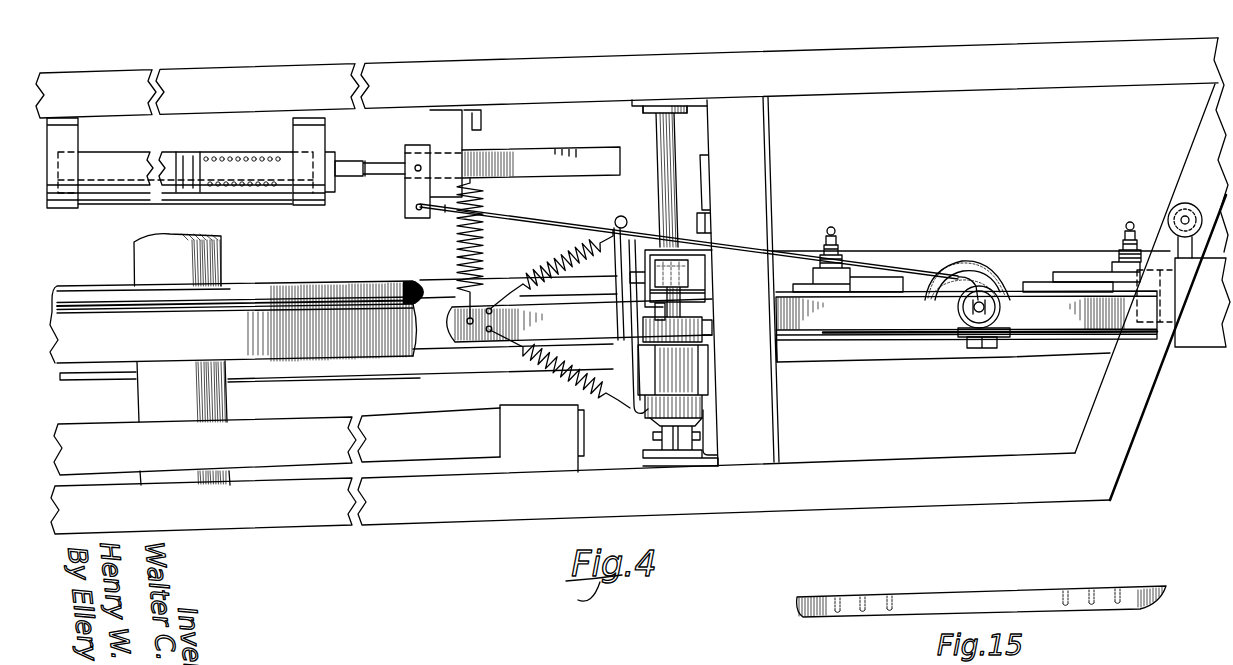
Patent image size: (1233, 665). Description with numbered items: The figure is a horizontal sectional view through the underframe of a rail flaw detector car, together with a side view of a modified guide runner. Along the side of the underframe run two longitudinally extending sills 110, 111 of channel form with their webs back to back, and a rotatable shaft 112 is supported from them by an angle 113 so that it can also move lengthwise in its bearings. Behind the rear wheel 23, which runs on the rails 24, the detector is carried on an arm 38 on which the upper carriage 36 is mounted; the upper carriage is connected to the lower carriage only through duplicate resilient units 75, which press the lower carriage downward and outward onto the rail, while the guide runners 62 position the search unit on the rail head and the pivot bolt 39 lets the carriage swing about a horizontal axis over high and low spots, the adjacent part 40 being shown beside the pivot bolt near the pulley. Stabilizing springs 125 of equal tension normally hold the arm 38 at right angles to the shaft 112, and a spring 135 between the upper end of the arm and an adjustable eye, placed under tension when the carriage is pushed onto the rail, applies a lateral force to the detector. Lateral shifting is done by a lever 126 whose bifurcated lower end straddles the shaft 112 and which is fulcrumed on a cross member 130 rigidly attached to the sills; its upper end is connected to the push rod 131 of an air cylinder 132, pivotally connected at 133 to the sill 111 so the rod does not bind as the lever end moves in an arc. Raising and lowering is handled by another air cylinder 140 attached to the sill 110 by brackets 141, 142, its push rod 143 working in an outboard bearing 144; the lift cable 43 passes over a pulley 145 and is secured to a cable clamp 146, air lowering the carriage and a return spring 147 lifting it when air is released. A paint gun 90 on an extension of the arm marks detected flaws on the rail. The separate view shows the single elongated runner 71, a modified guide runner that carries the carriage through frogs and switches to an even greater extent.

In FIG. 4, the sill 110 is at (261, 77).
In FIG. 4, the sill 111 is at (336, 515).
In FIG. 4, the cross member 130 is at (768, 137).
In FIG. 4, the angle 113 is at (696, 100).
In FIG. 4, the rotatable shaft 112 is at (657, 143).
In FIG. 4, the rear wheel 23 is at (297, 288).
In FIG. 4, the bracket 141 is at (78, 136).
In FIG. 4, the air cylinder 140 is at (173, 157).
In FIG. 4, the return spring 147 is at (240, 157).
In FIG. 4, the bracket 142 is at (320, 131).
In FIG. 4, the push rod 143 is at (366, 176).
In FIG. 4, the outboard bearing 144 is at (441, 138).
In FIG. 4, the cable clamp 146 is at (415, 212).
In FIG. 4, the lift cable 43 is at (527, 218).
In FIG. 4, the spring 135 is at (455, 252).
In FIG. 4, the stabilizing springs 125 is at (567, 257).
In FIG. 4, the push rod 131 is at (657, 309).
In FIG. 4, the lever 126 is at (678, 278).
In FIG. 4, the air cylinder 132 is at (703, 377).
In FIG. 4, the pivotal connection 133 is at (655, 435).
In FIG. 4, the arm 38 is at (888, 315).
In FIG. 4, the upper carriage 36 is at (1048, 337).
In FIG. 4, the resilient units 75 is at (842, 256).
In FIG. 4, the guide runners 62 is at (1038, 280).
In FIG. 4, the pulley 145 is at (965, 268).
In FIG. 4, the pulley 40 is at (963, 338).
In FIG. 4, the pivot bolt 39 is at (984, 348).
In FIG. 4, the paint gun 90 is at (1176, 204).
In FIG. 4, the rails 24 is at (1205, 320).
In FIG. 15, the elongated runner 71 is at (979, 596).